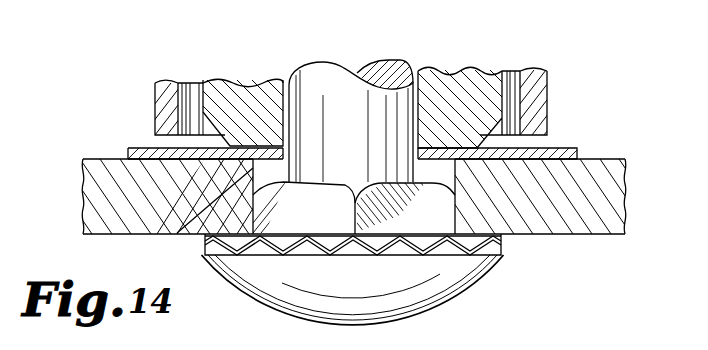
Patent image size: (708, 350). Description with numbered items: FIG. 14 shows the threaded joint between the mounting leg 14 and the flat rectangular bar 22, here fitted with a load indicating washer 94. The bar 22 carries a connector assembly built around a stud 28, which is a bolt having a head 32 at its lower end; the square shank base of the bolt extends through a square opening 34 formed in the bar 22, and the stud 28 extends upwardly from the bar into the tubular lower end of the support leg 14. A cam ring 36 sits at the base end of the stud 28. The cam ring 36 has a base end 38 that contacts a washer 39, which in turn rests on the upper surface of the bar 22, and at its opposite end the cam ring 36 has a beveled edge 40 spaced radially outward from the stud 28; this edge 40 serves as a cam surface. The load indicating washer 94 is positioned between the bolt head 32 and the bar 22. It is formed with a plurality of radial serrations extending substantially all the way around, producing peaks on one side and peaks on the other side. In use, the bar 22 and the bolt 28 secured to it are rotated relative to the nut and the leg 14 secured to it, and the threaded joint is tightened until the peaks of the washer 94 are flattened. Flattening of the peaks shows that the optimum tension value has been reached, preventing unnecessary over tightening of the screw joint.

The mounting leg 14 is at (155, 103).
The flat rectangular bar 22 is at (570, 222).
The stud 28 is at (322, 72).
The head 32 is at (425, 294).
The square opening 34 is at (265, 208).
The cam ring 36 is at (458, 78).
The base end 38 is at (178, 236).
The washer 39 is at (134, 149).
The edge 40 is at (200, 122).
The load indicating washer 94 is at (270, 257).